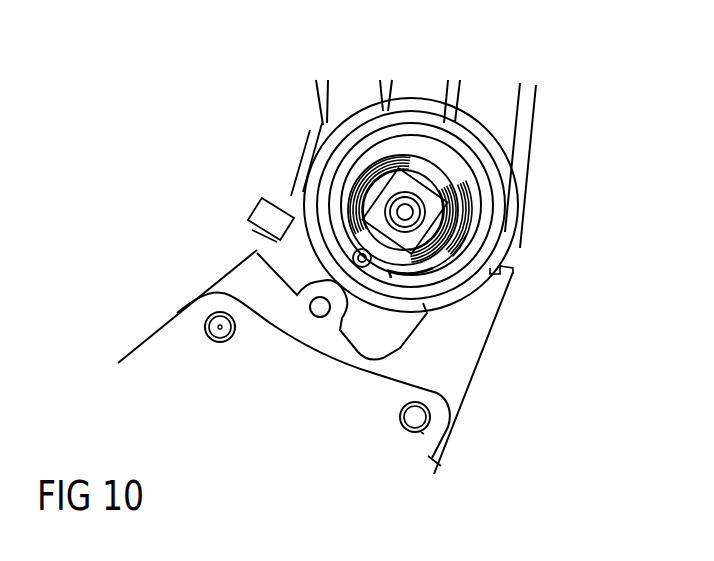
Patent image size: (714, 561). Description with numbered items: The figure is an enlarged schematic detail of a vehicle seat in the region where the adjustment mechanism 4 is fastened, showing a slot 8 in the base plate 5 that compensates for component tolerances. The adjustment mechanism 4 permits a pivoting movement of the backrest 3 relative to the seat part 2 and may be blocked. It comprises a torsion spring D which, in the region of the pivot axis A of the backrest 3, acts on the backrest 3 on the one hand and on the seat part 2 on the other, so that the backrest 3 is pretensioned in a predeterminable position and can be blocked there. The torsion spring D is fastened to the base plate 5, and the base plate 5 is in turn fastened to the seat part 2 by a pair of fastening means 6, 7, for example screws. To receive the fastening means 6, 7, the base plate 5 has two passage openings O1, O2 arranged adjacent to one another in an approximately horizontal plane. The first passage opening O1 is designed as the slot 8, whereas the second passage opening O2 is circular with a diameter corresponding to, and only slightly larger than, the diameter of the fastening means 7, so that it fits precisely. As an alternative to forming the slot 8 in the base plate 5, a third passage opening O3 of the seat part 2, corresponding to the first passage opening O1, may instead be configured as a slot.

The adjustment mechanism 4 is at (300, 113).
The backrest 3 is at (535, 130).
The torsion spring D is at (495, 147).
The pivot axis A is at (502, 258).
The slot 8 is at (232, 342).
The first passage opening O1 is at (232, 342).
The third passage opening O3 is at (177, 313).
The fastening means 6 is at (208, 338).
The base plate 5 is at (447, 390).
The second passage opening O2 is at (432, 415).
The seat part 2 is at (433, 468).
The fastening means 7 is at (421, 432).